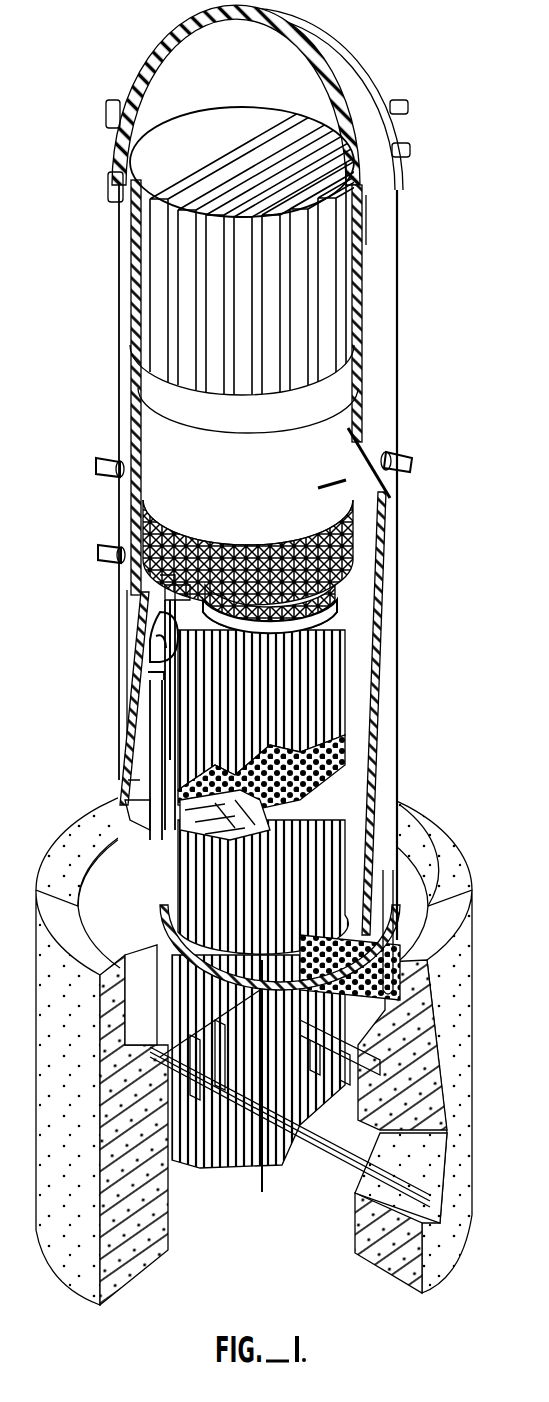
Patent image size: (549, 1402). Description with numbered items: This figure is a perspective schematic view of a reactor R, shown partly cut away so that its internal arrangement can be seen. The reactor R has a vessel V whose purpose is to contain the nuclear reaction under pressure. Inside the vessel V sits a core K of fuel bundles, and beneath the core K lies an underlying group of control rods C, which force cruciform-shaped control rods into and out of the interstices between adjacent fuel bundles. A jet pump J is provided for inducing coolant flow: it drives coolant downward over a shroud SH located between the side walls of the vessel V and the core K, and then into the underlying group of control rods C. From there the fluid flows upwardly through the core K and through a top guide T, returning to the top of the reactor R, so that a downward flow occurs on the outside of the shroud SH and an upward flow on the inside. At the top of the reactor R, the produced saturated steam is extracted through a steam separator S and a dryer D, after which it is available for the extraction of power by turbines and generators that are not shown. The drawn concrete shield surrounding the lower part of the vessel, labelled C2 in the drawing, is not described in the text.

The dryer D is at (342, 232).
The reactor R is at (408, 252).
The steam separator S is at (340, 447).
The top guide T is at (338, 527).
The shroud SH is at (150, 592).
The jet pump J is at (148, 648).
The core K is at (260, 712).
The vessel V is at (383, 718).
The control rods C is at (274, 884).
The concrete shield C2 is at (254, 1037).